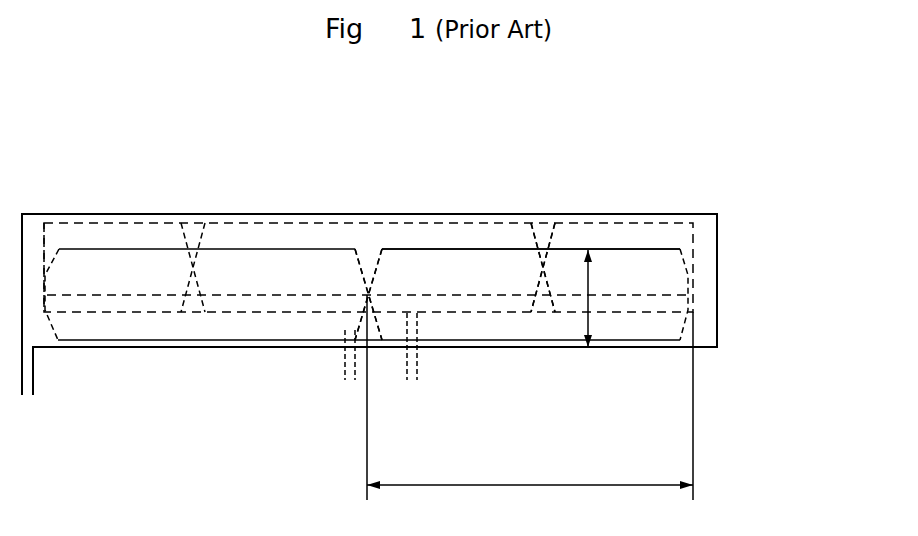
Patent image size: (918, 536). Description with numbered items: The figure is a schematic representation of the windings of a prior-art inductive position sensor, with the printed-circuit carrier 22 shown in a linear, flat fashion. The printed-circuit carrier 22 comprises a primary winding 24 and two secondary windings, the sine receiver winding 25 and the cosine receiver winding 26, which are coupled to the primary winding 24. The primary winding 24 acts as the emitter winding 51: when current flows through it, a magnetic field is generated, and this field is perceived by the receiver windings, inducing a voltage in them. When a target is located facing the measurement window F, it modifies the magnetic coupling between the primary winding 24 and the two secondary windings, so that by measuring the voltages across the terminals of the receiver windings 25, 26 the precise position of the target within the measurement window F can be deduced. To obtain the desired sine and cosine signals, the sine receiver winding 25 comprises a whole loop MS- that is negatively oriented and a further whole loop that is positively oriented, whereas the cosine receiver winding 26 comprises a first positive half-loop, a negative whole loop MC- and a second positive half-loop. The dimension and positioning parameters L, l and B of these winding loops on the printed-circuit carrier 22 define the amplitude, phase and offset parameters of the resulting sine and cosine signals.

The measurement window F is at (726, 165).
The primary winding 24 is at (108, 214).
The cosine receiver winding 26 is at (238, 214).
The emitter winding 51 is at (62, 214).
The sine receiver winding 25 is at (443, 250).
The positioning parameter B is at (317, 292).
The printed-circuit carrier 22 is at (571, 178).
The dimension parameter l is at (595, 282).
The dimension parameter L is at (530, 397).
The negatively oriented whole loop MS- is at (197, 355).
The negative whole loop MC- is at (328, 325).